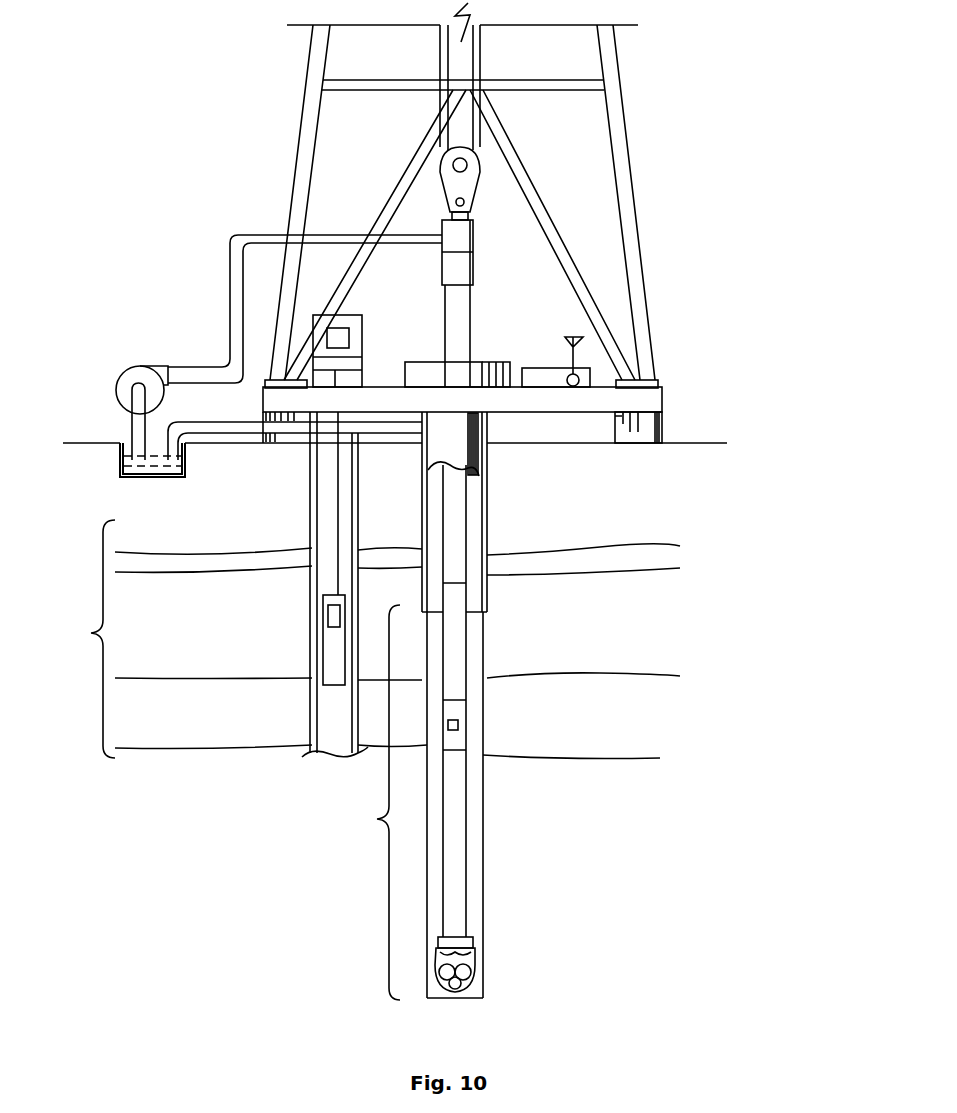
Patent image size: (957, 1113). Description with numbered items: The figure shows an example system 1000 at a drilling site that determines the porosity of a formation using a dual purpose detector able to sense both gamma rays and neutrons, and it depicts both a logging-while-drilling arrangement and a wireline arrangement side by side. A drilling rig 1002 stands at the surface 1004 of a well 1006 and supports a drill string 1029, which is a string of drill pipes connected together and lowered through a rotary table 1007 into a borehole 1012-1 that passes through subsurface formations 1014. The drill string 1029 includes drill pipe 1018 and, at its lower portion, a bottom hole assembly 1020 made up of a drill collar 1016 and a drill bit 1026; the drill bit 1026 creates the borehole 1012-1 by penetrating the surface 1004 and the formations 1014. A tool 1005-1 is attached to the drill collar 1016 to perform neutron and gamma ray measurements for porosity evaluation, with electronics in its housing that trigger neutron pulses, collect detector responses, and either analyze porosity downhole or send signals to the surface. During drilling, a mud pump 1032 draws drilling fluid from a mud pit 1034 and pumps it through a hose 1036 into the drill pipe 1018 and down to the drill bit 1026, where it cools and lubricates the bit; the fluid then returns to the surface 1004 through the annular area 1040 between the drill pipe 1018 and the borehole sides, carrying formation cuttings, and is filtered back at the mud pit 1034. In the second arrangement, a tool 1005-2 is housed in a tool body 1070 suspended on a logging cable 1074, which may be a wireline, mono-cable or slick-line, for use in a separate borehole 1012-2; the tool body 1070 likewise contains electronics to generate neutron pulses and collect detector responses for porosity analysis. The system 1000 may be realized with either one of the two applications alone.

The system 1000 is at (210, 80).
The drilling rig 1002 is at (630, 156).
The surface 1004 is at (680, 443).
The well 1006 is at (492, 441).
The rotary table 1007 is at (422, 362).
The borehole 1012-1 is at (476, 556).
The borehole 1012-2 is at (312, 545).
The subsurface formations 1014 is at (356, 639).
The drill collar 1016 is at (483, 698).
The drill pipe 1018 is at (465, 623).
The bottom hole assembly 1020 is at (401, 802).
The drill bit 1026 is at (480, 957).
The drill string 1029 is at (470, 498).
The mud pump 1032 is at (143, 365).
The mud pit 1034 is at (128, 440).
The hose 1036 is at (230, 315).
The annular area 1040 is at (472, 660).
The tool body 1070 is at (323, 648).
The logging cable 1074 is at (337, 498).
The tool 1005-1 is at (458, 725).
The tool 1005-2 is at (330, 612).